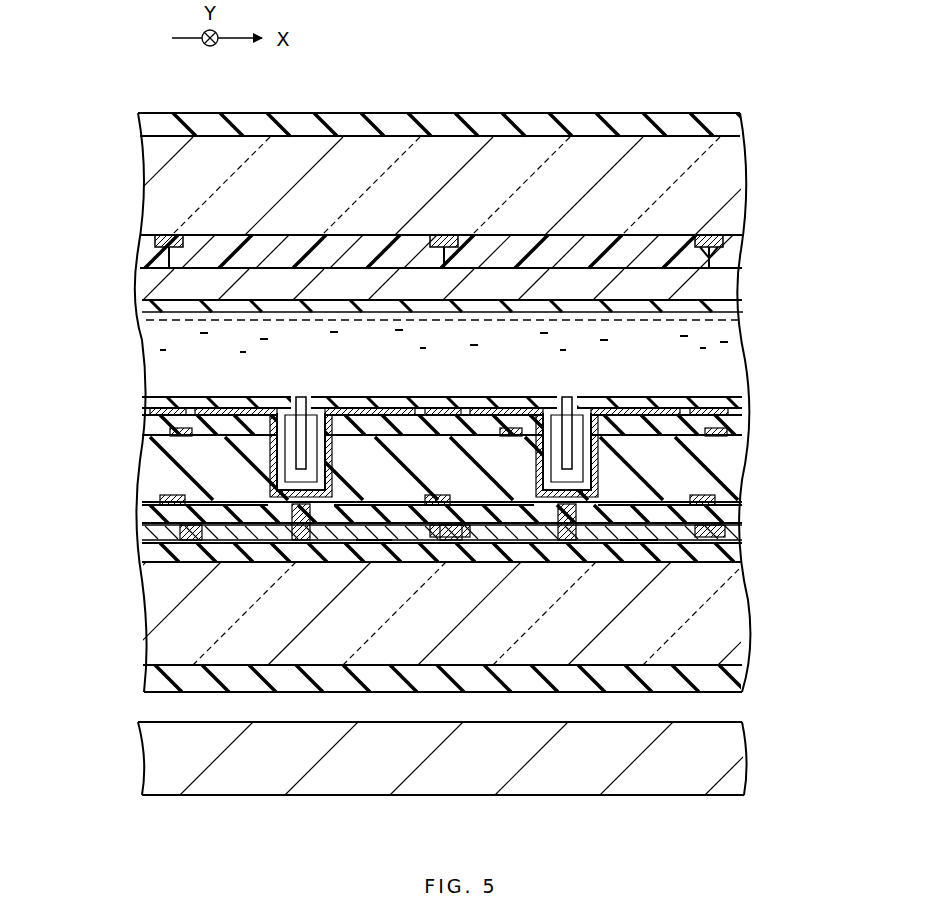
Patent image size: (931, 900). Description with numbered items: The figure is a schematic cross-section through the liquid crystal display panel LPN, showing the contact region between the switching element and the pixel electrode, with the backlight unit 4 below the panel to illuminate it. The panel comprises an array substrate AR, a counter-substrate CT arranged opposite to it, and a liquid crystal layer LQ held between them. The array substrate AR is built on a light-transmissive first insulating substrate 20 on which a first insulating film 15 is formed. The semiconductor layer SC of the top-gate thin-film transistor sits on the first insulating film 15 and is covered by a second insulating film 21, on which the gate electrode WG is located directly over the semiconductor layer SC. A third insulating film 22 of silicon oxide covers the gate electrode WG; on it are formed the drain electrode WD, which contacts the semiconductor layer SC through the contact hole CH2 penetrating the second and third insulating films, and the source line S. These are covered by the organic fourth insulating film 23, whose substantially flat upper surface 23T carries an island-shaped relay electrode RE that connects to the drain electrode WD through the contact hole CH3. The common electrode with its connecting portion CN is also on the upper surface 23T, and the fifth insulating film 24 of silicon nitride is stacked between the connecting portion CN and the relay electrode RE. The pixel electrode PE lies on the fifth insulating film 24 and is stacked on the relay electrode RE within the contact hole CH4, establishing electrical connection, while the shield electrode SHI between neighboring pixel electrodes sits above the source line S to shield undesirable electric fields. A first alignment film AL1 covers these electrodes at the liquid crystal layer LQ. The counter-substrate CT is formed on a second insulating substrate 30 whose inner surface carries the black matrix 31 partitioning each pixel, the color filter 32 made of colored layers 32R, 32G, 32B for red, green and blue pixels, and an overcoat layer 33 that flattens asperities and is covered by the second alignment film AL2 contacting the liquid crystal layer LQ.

The liquid crystal display panel LPN is at (140, 110).
The counter-substrate CT is at (750, 160).
The array substrate AR is at (748, 636).
The second insulating substrate 30 is at (142, 184).
The black matrix 31 is at (178, 234).
The color filter 32 is at (748, 254).
The red-colored layer 32R is at (255, 250).
The green-colored layer 32G is at (570, 250).
The blue-colored layer 32B is at (140, 245).
The overcoat layer 33 is at (142, 291).
The second alignment film AL2 is at (142, 307).
The first alignment film AL1 is at (150, 402).
The liquid crystal layer LQ is at (146, 352).
The shield electrode SHI is at (172, 407).
The pixel electrode PE is at (350, 407).
The contact hole CH4 is at (295, 408).
The upper surface 23T is at (510, 410).
The fifth insulating film 24 is at (740, 420).
The fourth insulating film 23 is at (736, 476).
The third insulating film 22 is at (740, 510).
The second insulating film 21 is at (742, 531).
The first insulating film 15 is at (742, 553).
The first insulating substrate 20 is at (145, 616).
The connecting portion CN is at (182, 437).
The contact hole CH3 is at (290, 492).
The relay electrode RE is at (327, 462).
The source line S is at (172, 545).
The contact hole CH2 is at (285, 545).
The drain electrode WD is at (300, 525).
The gate electrode WG is at (396, 535).
The semiconductor layer SC is at (353, 560).
The backlight unit 4 is at (736, 757).